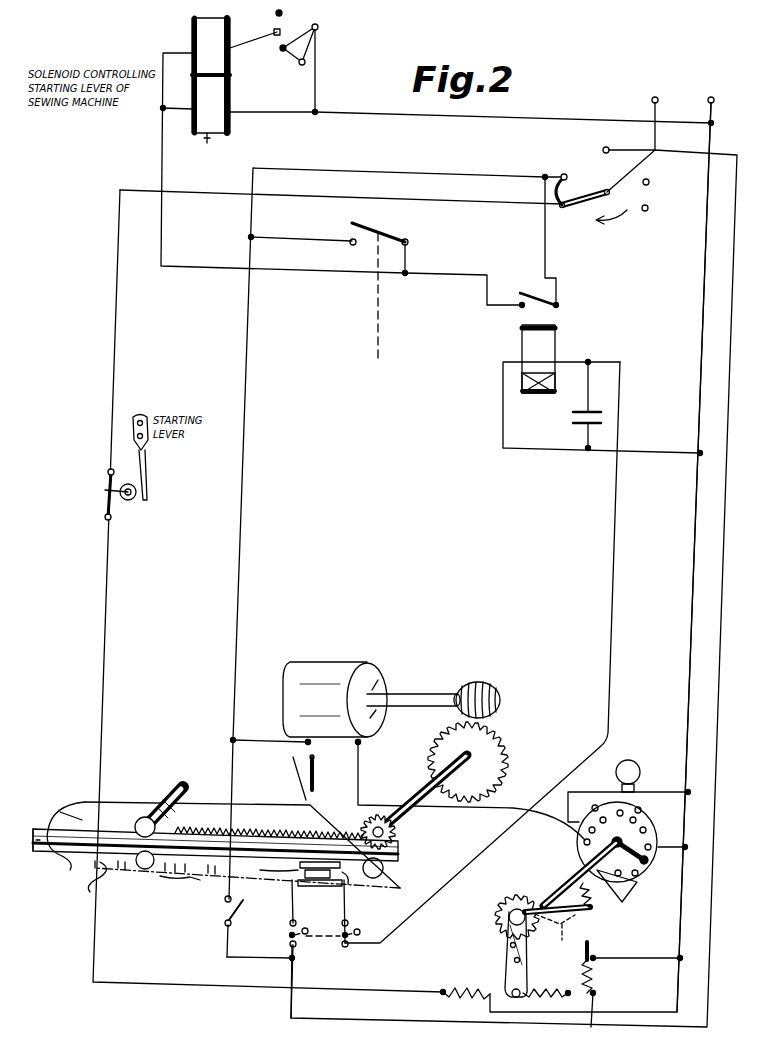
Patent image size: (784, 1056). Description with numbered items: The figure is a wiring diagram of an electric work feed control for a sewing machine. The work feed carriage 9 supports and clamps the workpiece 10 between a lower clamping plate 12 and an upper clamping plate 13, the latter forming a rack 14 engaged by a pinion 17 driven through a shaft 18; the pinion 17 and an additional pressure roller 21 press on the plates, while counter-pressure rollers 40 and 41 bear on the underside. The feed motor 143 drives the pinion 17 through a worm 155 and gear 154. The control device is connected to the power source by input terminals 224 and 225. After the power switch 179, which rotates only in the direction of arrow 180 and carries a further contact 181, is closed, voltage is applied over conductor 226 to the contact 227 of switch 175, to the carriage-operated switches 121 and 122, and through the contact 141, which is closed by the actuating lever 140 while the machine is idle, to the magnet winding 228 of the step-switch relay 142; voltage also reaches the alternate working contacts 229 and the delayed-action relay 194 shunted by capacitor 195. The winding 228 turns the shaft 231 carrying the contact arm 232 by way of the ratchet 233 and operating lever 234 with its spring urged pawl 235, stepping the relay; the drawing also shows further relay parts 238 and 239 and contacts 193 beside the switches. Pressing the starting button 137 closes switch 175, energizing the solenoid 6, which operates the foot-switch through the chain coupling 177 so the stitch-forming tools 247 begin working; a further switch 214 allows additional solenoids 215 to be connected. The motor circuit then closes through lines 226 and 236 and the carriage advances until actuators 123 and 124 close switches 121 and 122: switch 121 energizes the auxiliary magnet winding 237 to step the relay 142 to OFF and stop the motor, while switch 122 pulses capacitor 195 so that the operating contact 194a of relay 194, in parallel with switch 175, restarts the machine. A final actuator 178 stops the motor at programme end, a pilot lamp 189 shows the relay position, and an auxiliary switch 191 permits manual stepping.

The solenoid 215 is at (196, 30).
The solenoid 6 is at (207, 147).
The further switch 214 is at (305, 26).
The input terminal 224 is at (653, 98).
The input terminal 225 is at (714, 99).
The further contact 181 is at (603, 150).
The line or conductor 226 is at (385, 171).
The contact 227 is at (352, 246).
The starting button 137 is at (350, 221).
The switch 175 is at (404, 238).
The wire or chain coupling 177 is at (382, 333).
The power switch 179 is at (574, 210).
The arrow 180 is at (625, 216).
The operating contact 194a is at (558, 296).
The delayed-action relay 194 is at (555, 343).
The electrical capacitor 195 is at (572, 415).
The line 236 is at (701, 293).
The contact 141 is at (103, 492).
The actuating lever 140 is at (148, 478).
The feed motor 143 is at (338, 660).
The worm 155 is at (477, 682).
The gear 154 is at (506, 735).
The shaft 18 is at (414, 790).
The pinion 17 is at (364, 824).
The counter-pressure roller 40 is at (384, 870).
The stitch-forming tools 247 is at (316, 770).
The work feed carriage 9 is at (116, 794).
The upper clamping plate 13 is at (74, 812).
The workpiece 10 is at (210, 812).
The rack 14 is at (260, 832).
The pressure roller 21 is at (150, 815).
The counter-pressure roller 41 is at (148, 870).
The lower clamping plate 12 is at (42, 855).
The final actuator 178 is at (97, 868).
The switch actuator 124 is at (126, 870).
The switch actuator 123 is at (185, 873).
The auxiliary switch 191 is at (241, 924).
The first carriage-operated switch 121 is at (308, 887).
The second carriage-operated switch 122 is at (350, 886).
The switch contacts 193 is at (317, 937).
The pilot lamp 189 is at (638, 764).
The contact arm 232 is at (648, 828).
The shaft 231 is at (584, 842).
The first relay 142 is at (566, 866).
The alternate working contacts 229 is at (632, 880).
The ratchet 233 is at (496, 915).
The link 238 is at (584, 916).
The spring 239 is at (564, 930).
The spring urged pawl 235 is at (504, 954).
The operating lever 234 is at (520, 978).
The auxiliary magnet winding 237 is at (594, 975).
The magnet winding 228 is at (462, 1000).